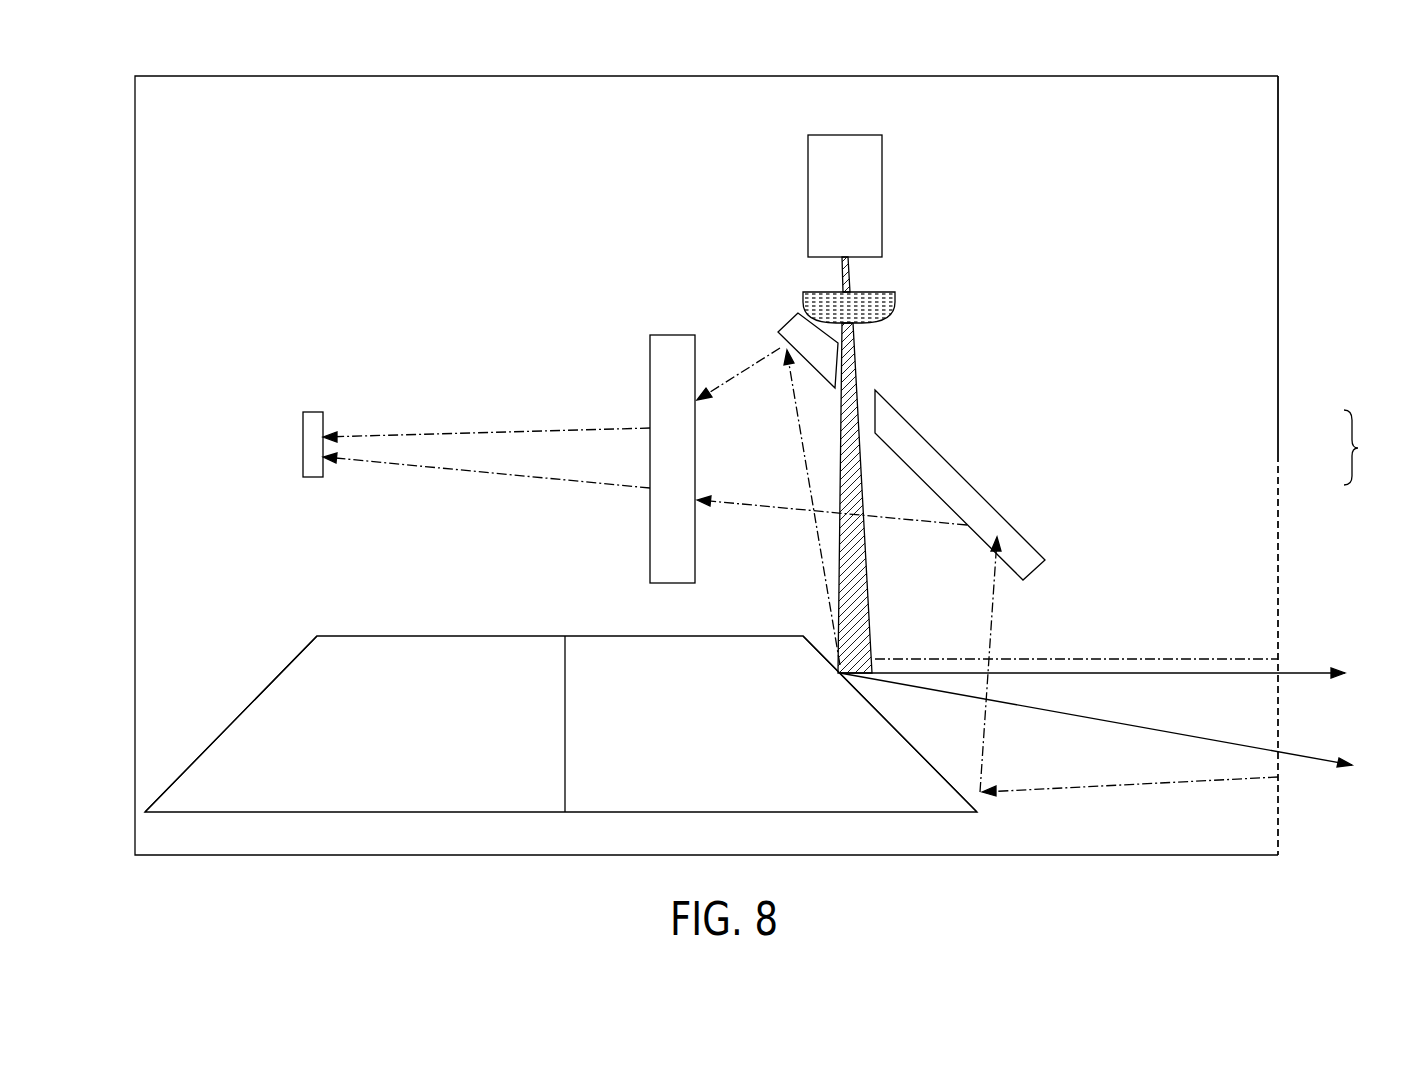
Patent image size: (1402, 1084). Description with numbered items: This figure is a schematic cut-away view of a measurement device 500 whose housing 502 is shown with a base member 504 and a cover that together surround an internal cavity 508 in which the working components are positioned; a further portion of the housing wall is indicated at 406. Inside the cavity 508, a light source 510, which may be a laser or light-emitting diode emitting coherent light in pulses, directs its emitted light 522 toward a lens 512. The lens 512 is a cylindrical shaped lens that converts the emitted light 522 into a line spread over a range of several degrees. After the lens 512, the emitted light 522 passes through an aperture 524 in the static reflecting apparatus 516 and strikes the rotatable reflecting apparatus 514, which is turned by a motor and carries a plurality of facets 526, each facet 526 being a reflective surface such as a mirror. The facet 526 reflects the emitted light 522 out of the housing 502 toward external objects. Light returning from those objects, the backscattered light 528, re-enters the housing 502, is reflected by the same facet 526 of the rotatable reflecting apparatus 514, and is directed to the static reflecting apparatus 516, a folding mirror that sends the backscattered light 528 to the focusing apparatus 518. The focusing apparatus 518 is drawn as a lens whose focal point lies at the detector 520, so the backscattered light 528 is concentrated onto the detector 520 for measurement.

The measurement device 500 is at (85, 148).
The housing 502 is at (1367, 447).
The base member 504 is at (1279, 440).
The window layer 406 is at (1280, 482).
The internal cavity 508 is at (205, 146).
The light source 510 is at (862, 213).
The lens 512 is at (877, 310).
The rotatable reflecting apparatus 514 is at (441, 635).
The static reflecting apparatus 516 is at (967, 482).
The focusing apparatus 518 is at (668, 334).
The detector 520 is at (311, 411).
The emitted light 522 is at (847, 290).
The aperture 524 is at (875, 405).
The facet 526 is at (240, 715).
The backscattered light 528 is at (478, 427).